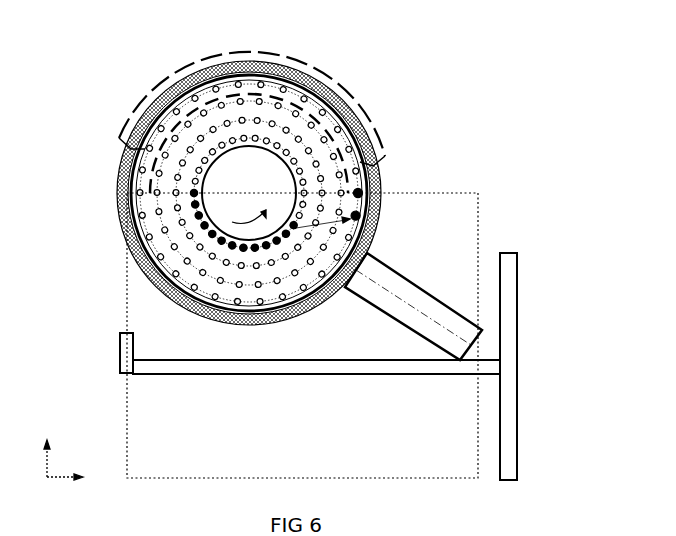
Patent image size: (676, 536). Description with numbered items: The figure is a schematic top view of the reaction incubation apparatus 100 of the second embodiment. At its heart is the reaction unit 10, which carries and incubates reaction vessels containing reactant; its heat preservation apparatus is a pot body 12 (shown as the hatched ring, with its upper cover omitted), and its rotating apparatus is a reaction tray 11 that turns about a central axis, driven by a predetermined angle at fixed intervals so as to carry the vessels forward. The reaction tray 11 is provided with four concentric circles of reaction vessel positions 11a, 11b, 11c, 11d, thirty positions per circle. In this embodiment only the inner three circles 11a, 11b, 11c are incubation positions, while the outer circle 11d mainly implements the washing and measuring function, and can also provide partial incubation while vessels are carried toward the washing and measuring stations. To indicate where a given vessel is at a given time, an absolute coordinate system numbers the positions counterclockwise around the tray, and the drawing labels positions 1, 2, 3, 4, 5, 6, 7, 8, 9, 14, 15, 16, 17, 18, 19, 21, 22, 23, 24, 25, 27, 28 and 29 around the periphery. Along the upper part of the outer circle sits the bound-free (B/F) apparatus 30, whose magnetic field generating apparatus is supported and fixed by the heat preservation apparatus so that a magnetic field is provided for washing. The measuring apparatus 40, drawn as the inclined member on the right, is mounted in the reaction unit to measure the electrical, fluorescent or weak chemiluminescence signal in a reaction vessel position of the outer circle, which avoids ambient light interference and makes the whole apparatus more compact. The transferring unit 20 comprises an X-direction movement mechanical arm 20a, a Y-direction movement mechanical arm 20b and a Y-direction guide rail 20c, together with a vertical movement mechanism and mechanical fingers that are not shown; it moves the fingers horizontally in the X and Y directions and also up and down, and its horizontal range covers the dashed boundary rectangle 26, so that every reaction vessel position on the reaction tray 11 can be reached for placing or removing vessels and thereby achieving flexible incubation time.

The reaction incubation apparatus 100 is at (462, 86).
The reaction unit 10 is at (93, 95).
The reaction tray 11 is at (122, 157).
The first circle of reaction vessel positions 11a is at (195, 228).
The second circle of reaction vessel positions 11b is at (178, 217).
The third circle of reaction vessel positions 11c is at (155, 205).
The fourth circle of reaction vessel positions 11d is at (150, 162).
The pot body 12 is at (150, 270).
The transferring unit 20 is at (521, 383).
The X-direction movement mechanical arm 20a is at (120, 355).
The Y-direction movement mechanical arm 20b is at (200, 375).
The Y-direction guide rail 20c is at (505, 308).
The boundary rectangle 26 is at (480, 217).
The bound-free (B/F) apparatus 30 is at (329, 73).
The measuring apparatus 40 is at (425, 283).
The reaction vessel position number 1 is at (108, 195).
The reaction vessel position number 2 is at (113, 227).
The reaction vessel position number 3 is at (118, 253).
The reaction vessel position number 4 is at (134, 280).
The reaction vessel position number 5 is at (153, 298).
The reaction vessel position number 6 is at (178, 318).
The reaction vessel position number 7 is at (201, 330).
The reaction vessel position number 8 is at (229, 338).
The reaction vessel position number 9 is at (258, 338).
The reaction vessel position number 14 is at (385, 249).
The reaction vessel position number 15 is at (392, 217).
The reaction vessel position number 16 is at (392, 192).
The reaction vessel position number 17 is at (400, 155).
The reaction vessel position number 18 is at (392, 128).
The reaction vessel position number 19 is at (374, 100).
The reaction vessel position number 21 is at (325, 57).
The reaction vessel position number 22 is at (297, 46).
The reaction vessel position number 23 is at (264, 40).
The reaction vessel position number 24 is at (232, 42).
The reaction vessel position number 25 is at (199, 49).
The reaction vessel position number 27 is at (142, 80).
The reaction vessel position number 28 is at (117, 103).
The reaction vessel position number 29 is at (102, 133).